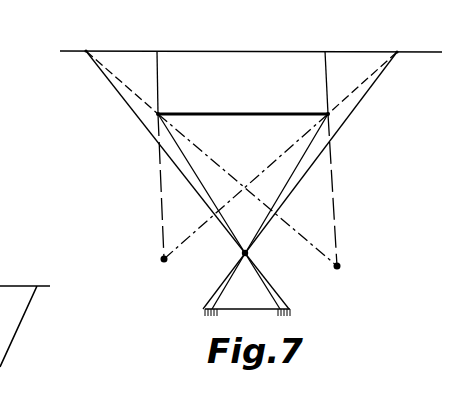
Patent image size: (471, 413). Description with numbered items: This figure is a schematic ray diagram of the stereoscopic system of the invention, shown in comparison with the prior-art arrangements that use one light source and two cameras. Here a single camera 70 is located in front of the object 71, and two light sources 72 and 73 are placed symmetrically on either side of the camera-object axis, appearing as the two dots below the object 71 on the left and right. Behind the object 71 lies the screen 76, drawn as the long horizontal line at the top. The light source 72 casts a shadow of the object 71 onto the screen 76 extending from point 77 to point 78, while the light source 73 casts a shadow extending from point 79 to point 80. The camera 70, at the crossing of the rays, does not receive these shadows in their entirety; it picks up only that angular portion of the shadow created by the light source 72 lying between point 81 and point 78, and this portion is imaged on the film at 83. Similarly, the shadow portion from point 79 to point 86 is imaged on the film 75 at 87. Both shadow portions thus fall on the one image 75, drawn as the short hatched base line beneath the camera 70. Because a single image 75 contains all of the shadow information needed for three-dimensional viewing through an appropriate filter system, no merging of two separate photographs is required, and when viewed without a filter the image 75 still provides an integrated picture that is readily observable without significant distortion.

The camera 70 is at (243, 255).
The object 71 is at (262, 112).
The light source 72 is at (162, 258).
The light source 73 is at (339, 266).
The image 75 is at (239, 310).
The screen 76 is at (64, 50).
The point 77 is at (158, 50).
The point 78 is at (396, 51).
The point 79 is at (88, 50).
The point 80 is at (326, 50).
The point 81 is at (325, 112).
The film image of shadow 83 is at (207, 311).
The point 86 is at (161, 112).
The film image of shadow 87 is at (290, 311).